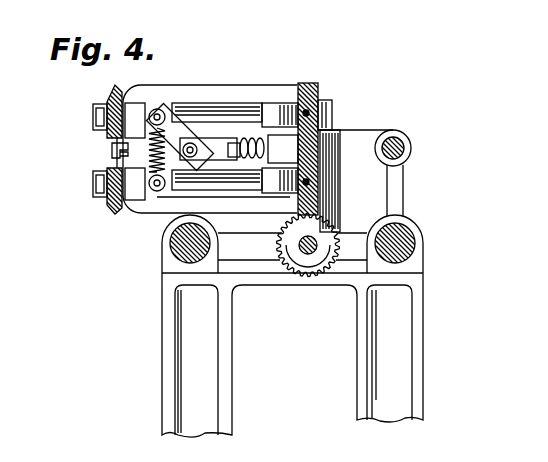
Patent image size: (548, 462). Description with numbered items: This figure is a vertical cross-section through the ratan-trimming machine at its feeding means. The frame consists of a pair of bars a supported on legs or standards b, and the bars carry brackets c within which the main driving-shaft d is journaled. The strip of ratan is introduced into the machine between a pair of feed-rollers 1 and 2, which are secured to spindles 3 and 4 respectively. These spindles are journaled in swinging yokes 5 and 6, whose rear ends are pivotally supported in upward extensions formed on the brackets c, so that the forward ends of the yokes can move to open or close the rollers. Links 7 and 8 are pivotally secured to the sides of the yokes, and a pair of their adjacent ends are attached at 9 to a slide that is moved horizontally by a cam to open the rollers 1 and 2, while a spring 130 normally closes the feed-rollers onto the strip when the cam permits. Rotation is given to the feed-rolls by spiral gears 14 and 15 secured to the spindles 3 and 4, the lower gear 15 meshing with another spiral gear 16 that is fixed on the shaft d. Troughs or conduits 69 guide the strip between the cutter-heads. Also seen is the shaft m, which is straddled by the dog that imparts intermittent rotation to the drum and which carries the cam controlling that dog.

The feed-roller 1 is at (112, 93).
The feed-roller 2 is at (108, 208).
The spindle 3 is at (93, 120).
The spindle 4 is at (93, 187).
The swinging yoke 5 is at (262, 90).
The swinging yoke 6 is at (223, 204).
The link 7 is at (172, 124).
The link 8 is at (190, 148).
The attachment point of links 9 is at (190, 148).
The spiral gear 14 is at (315, 85).
The spiral gear 15 is at (328, 196).
The spiral gear 16 is at (295, 277).
The trough 69 is at (112, 150).
The spring 130 is at (148, 152).
The bar a is at (172, 245).
The leg b is at (165, 368).
The bracket c is at (292, 253).
The main driving-shaft d is at (309, 255).
The shaft m is at (404, 148).